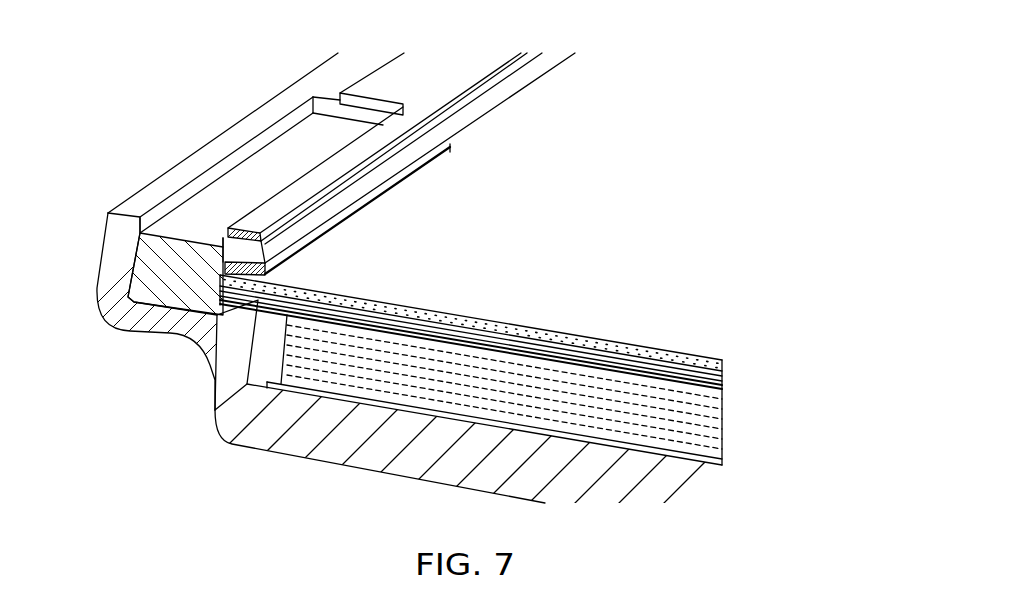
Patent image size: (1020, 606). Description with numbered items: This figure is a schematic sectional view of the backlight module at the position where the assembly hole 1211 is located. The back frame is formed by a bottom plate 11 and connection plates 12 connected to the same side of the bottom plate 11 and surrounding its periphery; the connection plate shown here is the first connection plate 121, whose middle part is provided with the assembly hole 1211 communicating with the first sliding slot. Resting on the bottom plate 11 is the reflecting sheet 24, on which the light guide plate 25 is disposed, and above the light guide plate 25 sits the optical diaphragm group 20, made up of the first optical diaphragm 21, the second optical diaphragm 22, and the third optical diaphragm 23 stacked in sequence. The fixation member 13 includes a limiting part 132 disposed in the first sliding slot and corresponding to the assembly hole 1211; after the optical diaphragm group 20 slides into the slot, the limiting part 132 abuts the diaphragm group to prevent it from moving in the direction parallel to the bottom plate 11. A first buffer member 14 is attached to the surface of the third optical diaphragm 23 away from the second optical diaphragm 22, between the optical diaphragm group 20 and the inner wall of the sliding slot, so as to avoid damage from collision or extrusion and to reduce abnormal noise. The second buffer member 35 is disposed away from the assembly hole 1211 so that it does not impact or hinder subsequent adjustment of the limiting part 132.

The bottom plate 11 is at (337, 442).
The connection plate 12 is at (222, 211).
The first connection plate 121 is at (243, 352).
The assembly hole 1211 is at (282, 128).
The fixation member 13 is at (231, 208).
The limiting part 132 is at (227, 197).
The first buffer member 14 is at (265, 253).
The second buffer member 35 is at (380, 138).
The optical diaphragm group 20 is at (551, 259).
The third optical diaphragm 23 is at (700, 360).
The second optical diaphragm 22 is at (722, 370).
The first optical diaphragm 21 is at (722, 385).
The light guide plate 25 is at (690, 433).
The reflecting sheet 24 is at (707, 467).